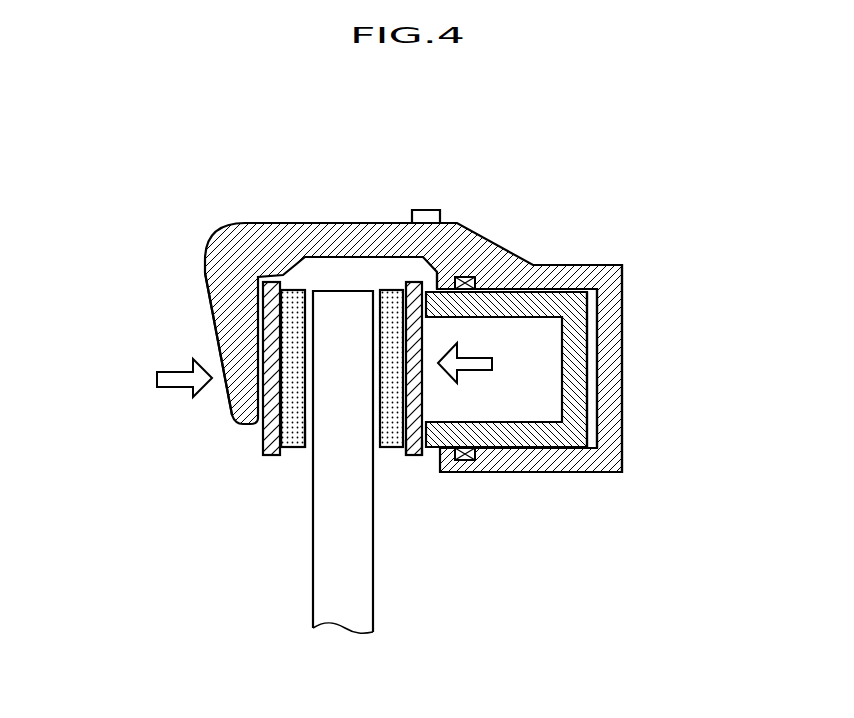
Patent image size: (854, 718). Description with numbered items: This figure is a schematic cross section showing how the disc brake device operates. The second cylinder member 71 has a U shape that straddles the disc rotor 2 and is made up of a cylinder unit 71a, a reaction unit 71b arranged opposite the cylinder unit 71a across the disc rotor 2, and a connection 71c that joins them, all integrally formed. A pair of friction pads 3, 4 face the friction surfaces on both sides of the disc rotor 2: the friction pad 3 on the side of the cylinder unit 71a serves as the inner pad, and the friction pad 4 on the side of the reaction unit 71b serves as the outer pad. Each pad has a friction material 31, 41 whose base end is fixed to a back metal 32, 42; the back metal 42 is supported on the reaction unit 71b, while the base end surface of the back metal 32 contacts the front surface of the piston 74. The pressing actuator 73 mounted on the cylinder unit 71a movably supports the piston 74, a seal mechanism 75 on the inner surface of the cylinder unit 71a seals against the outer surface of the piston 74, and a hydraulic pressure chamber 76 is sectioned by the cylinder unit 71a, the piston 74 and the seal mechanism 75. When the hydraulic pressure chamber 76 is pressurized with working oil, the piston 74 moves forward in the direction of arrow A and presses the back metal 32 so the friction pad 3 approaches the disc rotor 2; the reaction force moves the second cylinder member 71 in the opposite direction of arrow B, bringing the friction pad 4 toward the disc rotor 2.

The disc rotor 2 is at (340, 605).
The friction pad 3 is at (387, 455).
The friction pad 4 is at (300, 455).
The friction material 31 is at (400, 455).
The back metal 32 is at (410, 283).
The friction material 41 is at (292, 425).
The back metal 42 is at (274, 283).
The second cylinder member 71 is at (328, 218).
The cylinder unit 71a is at (582, 472).
The reaction unit 71b is at (233, 283).
The connection 71c is at (452, 280).
The pressing actuator 73 is at (578, 240).
The piston 74 is at (510, 418).
The seal mechanism 75 is at (467, 287).
The hydraulic pressure chamber 76 is at (590, 322).
The arrow A is at (485, 357).
The arrow B is at (168, 388).